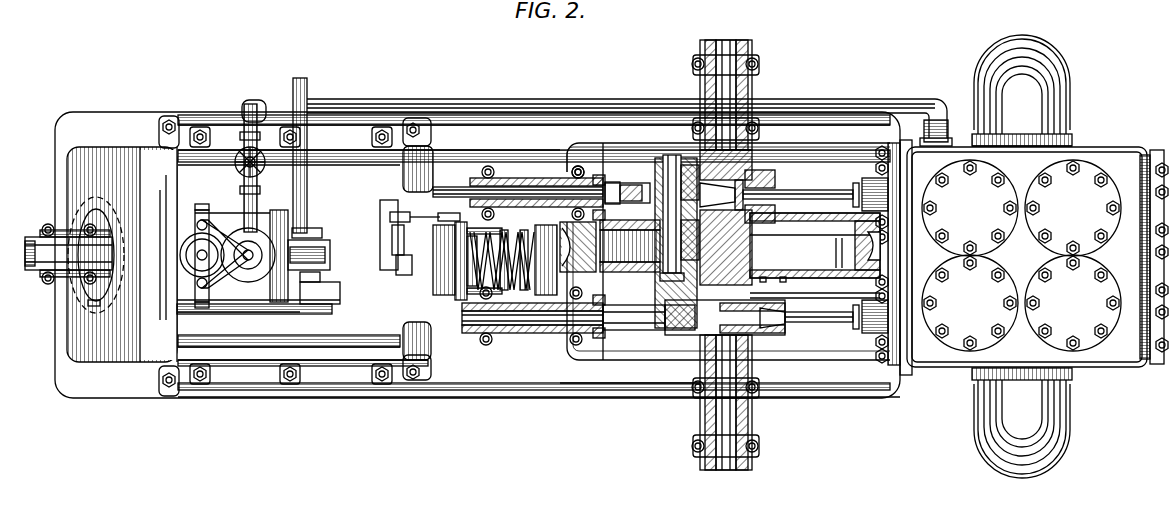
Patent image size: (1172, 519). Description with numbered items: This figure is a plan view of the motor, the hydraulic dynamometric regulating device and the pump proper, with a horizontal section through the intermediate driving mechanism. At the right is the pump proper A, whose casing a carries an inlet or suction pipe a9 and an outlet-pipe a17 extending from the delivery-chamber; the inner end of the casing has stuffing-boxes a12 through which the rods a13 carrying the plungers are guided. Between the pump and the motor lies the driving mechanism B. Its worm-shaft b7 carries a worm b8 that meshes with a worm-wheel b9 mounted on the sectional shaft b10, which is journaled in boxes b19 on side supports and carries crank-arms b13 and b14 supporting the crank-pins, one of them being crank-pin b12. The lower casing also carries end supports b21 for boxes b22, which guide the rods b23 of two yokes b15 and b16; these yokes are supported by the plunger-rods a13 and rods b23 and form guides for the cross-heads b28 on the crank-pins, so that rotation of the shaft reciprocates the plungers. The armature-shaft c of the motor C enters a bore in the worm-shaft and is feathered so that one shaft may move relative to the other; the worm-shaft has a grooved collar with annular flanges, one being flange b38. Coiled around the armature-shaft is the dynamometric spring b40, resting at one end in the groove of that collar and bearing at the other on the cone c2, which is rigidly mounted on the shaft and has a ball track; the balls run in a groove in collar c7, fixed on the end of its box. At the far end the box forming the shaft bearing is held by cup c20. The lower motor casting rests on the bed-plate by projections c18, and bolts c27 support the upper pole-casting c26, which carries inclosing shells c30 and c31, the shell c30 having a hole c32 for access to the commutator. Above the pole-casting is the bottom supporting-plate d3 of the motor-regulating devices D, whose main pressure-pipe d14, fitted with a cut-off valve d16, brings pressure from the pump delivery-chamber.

The pump proper A is at (1034, 249).
The pump casing a is at (1018, 255).
The inlet or suction pipe a9 is at (1022, 90).
The outlet-pipe a17 is at (1022, 423).
The stuffing-boxes a12 is at (870, 245).
The plunger rods a13 is at (806, 198).
The driving mechanism B is at (733, 254).
The worm-shaft b7 is at (688, 398).
The worm b8 is at (815, 287).
The worm-wheel b9 is at (815, 245).
The sectional shaft b10 is at (729, 256).
The crank-pin b12 is at (664, 160).
The crank-arms b13 is at (752, 52).
The crank-arms b14 is at (688, 165).
The yoke b15 is at (668, 334).
The yoke b16 is at (742, 186).
The boxes b19 is at (740, 46).
The end supports b21 is at (503, 186).
The boxes b22 is at (528, 194).
The yoke rods b23 is at (488, 172).
The cross-heads b28 is at (642, 178).
The annular flange b38 is at (535, 300).
The dynamometric spring b40 is at (516, 290).
The motor C is at (477, 255).
The armature-shaft c is at (57, 253).
The cone c2 is at (462, 306).
The collar c7 is at (456, 225).
The projections c18 is at (168, 118).
The cup c20 is at (42, 270).
The upper pole-casting c26 is at (534, 247).
The bolts c27 is at (202, 128).
The inclosing shell c30 is at (160, 247).
The inclosing shell c31 is at (432, 160).
The hole c32 is at (92, 290).
The motor-regulating devices D is at (260, 243).
The bottom supporting-plate d3 is at (279, 302).
The main pressure-pipe d14 is at (935, 93).
The cut-off valve d16 is at (248, 142).